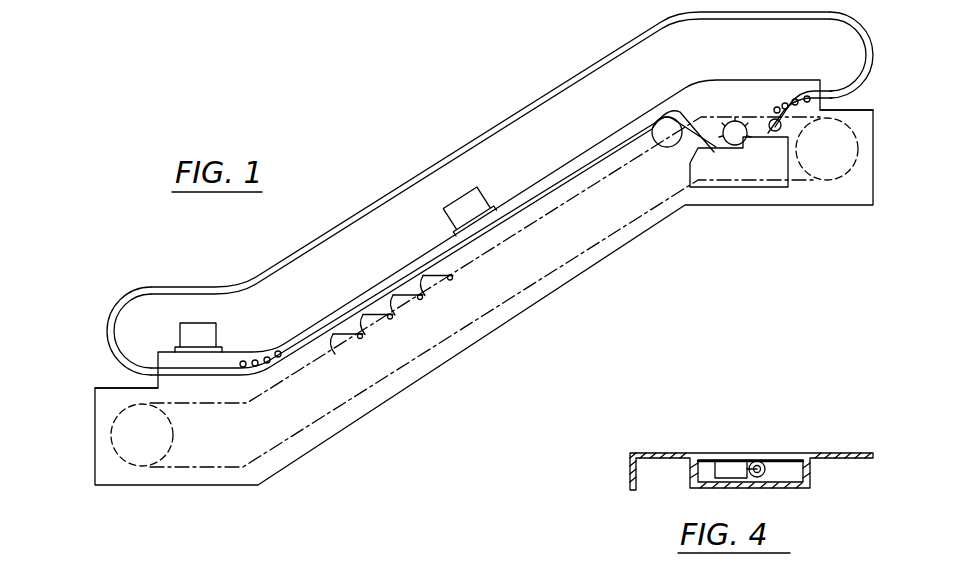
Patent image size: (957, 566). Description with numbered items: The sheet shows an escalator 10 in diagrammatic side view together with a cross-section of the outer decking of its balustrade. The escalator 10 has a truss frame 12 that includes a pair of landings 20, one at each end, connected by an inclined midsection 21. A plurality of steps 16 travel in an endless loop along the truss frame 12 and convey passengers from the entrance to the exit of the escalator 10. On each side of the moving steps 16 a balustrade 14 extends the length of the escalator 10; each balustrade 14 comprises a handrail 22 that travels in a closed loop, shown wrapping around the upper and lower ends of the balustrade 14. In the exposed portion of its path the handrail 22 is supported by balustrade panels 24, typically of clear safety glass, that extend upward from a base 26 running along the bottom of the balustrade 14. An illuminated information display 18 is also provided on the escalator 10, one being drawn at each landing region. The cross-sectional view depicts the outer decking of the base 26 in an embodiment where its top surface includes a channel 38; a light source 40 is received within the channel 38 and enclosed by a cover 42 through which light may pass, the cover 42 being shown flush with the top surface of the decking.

In FIG. 1, the escalator 10 is at (606, 300).
In FIG. 1, the truss frame 12 is at (436, 376).
In FIG. 1, the balustrades 14 is at (540, 82).
In FIG. 1, the steps 16 is at (432, 278).
In FIG. 1, the illuminated information display 18 is at (224, 330).
In FIG. 1, the landings 20 is at (115, 388).
In FIG. 1, the inclined midsection 21 is at (497, 288).
In FIG. 1, the handrail 22 is at (490, 134).
In FIG. 1, the balustrade panels 24 is at (613, 83).
In FIG. 1, the base 26 is at (156, 362).
In FIG. 4, the channel 38 is at (703, 460).
In FIG. 4, the light source 40 is at (727, 470).
In FIG. 4, the cover 42 is at (782, 455).